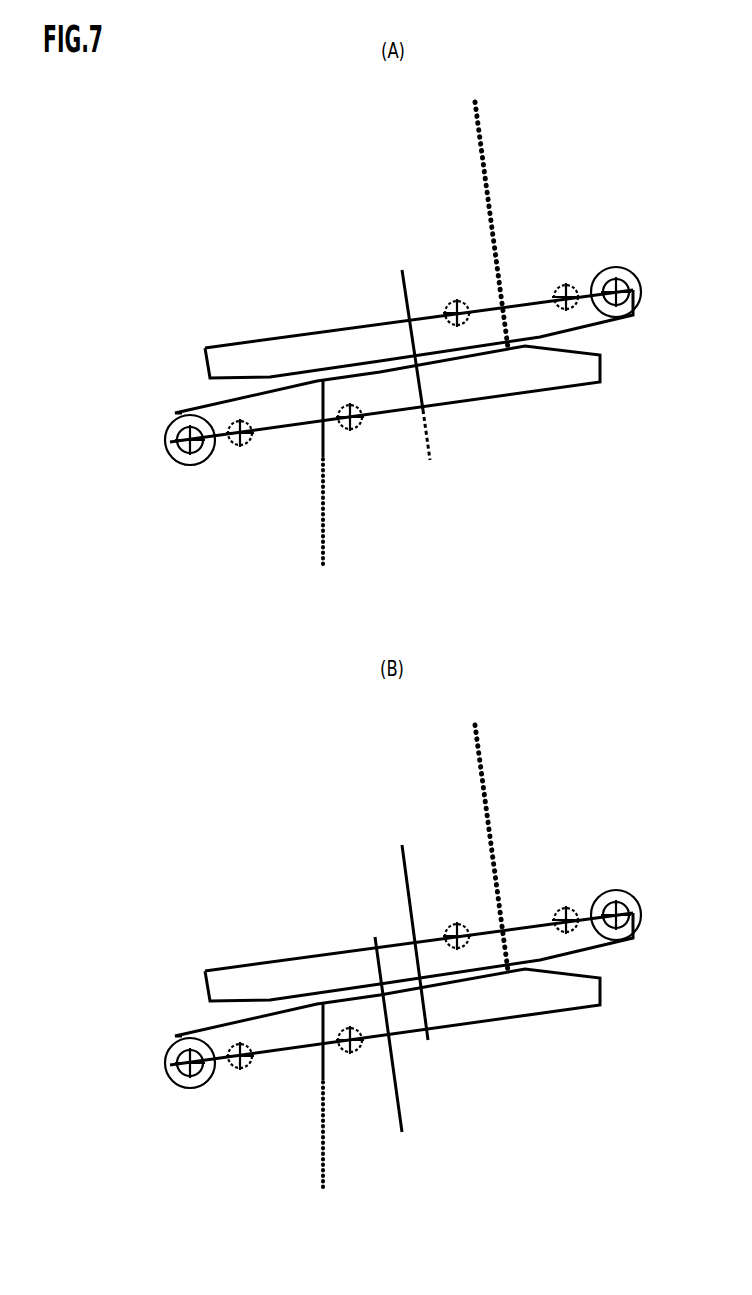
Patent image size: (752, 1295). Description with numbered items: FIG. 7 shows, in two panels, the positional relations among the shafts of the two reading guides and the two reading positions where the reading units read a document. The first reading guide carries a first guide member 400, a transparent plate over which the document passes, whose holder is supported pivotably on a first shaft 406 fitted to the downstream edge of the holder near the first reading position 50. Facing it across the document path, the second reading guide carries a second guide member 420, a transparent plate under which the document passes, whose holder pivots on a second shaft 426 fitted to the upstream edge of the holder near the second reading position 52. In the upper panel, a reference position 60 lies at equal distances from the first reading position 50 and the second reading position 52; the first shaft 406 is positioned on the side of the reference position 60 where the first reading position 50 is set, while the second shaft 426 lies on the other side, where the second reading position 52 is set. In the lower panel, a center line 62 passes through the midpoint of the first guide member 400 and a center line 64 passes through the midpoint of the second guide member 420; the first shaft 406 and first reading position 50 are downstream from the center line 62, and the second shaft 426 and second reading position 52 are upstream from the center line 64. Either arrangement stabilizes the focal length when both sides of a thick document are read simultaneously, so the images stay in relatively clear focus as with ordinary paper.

The first reading position 50 is at (313, 398).
The second reading position 52 is at (514, 320).
The reference position 60 is at (405, 352).
The center line 62 is at (403, 1141).
The center line 64 is at (397, 838).
The first guide member 400 is at (487, 383).
The first shaft 406 is at (186, 456).
The second guide member 420 is at (305, 334).
The second shaft 426 is at (634, 275).